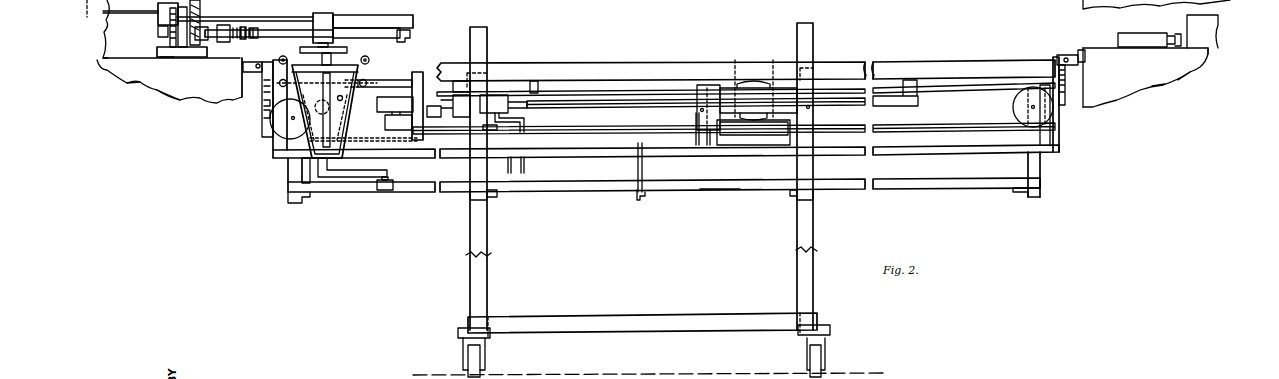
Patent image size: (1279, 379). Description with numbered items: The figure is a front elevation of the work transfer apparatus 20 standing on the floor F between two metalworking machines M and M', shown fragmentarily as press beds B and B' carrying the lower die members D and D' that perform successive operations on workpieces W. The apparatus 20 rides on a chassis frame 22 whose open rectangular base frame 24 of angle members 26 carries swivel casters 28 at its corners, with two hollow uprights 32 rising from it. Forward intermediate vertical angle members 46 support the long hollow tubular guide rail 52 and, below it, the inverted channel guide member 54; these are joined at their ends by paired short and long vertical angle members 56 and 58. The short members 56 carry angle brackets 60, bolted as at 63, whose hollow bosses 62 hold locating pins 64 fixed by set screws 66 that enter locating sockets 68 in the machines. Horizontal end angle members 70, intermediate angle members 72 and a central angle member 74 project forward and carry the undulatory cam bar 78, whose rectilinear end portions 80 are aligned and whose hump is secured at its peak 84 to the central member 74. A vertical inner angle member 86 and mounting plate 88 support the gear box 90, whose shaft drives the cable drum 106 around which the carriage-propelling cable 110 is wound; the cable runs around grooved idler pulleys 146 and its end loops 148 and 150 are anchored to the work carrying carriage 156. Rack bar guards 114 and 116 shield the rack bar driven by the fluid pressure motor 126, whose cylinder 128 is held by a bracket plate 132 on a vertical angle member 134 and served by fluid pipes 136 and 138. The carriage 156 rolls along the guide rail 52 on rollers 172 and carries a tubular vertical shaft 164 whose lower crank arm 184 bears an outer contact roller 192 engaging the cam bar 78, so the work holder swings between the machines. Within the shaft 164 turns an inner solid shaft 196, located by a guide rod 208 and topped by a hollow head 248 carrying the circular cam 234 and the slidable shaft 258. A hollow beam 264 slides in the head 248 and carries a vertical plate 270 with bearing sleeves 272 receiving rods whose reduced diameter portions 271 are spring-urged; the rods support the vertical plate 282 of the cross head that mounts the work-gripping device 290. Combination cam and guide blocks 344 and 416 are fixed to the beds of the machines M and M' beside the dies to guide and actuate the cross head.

The work transfer apparatus 20 is at (861, 53).
The chassis frame 22 is at (818, 295).
The base frame 24 is at (729, 310).
The angle members 26 is at (462, 325).
The swivel casters 28 is at (477, 354).
The hollow uprights 32 is at (472, 250).
The forward intermediate vertical angle members 46 is at (470, 167).
The hollow tubular guide rail 52 is at (613, 68).
The inverted channel guide member 54 is at (404, 153).
The short vertical angle members 56 is at (275, 146).
The long vertical angle members 58 is at (291, 177).
The angle brackets 60 is at (1070, 100).
The hollow bosses 62 is at (266, 86).
The bolts 63 is at (273, 113).
The locating pins 64 is at (257, 58).
The set screws 66 is at (1063, 55).
The locating sockets 68 is at (1102, 72).
The horizontal end angle members 70 is at (302, 203).
The intermediate horizontal angle members 72 is at (492, 196).
The central horizontal angle member 74 is at (643, 200).
The undulatory cam bar 78 is at (720, 188).
The rectilinear end portions 80 is at (411, 188).
The peak 84 is at (642, 145).
The vertical inner angle member 86 is at (698, 120).
The mounting plate 88 is at (718, 100).
The vertical gear box 90 is at (777, 80).
The cable drum 106 is at (765, 143).
The carriage-propelling cable 110 is at (968, 92).
The rack bar guard 114 is at (597, 107).
The rack bar guard 116 is at (873, 106).
The horizontal reciprocatory fluid pressure motor 126 is at (397, 108).
The cylinder 128 is at (493, 104).
The bracket plate 132 is at (433, 73).
The vertical angle member 134 is at (417, 145).
The fluid service pipe 136 is at (527, 122).
The fluid service pipe 138 is at (385, 123).
The grooved idler pulleys 146 is at (273, 122).
The cable end loop 148 is at (325, 111).
The cable end loop 150 is at (344, 99).
The work carrying carriage 156 is at (308, 163).
The tubular vertical shaft 164 is at (320, 80).
The rollers 172 is at (280, 59).
The crank arm 184 is at (352, 178).
The outer contact roller 192 is at (385, 191).
The inner solid shaft 196 is at (390, 177).
The guide rod 208 is at (331, 80).
The circular cam 234 is at (346, 52).
The hollow head 248 is at (328, 17).
The longitudinally slidable shaft 258 is at (405, 40).
The hollow beam 264 is at (393, 20).
The vertical plate 270 is at (203, 19).
The reduced diameter portions 271 is at (262, 17).
The bearing sleeves 272 is at (198, 50).
The vertical plate 282 is at (163, 27).
The work-gripping device 290 is at (120, 13).
The combination cam and guide block 344 is at (167, 52).
The combination cam and guide block 416 is at (1150, 34).
The workpieces W is at (169, 51).
The lower die member D is at (107, 76).
The bed B is at (128, 101).
The metalworking machine M is at (165, 119).
The lower die member D' is at (1223, 39).
The bed B' is at (1194, 80).
The metalworking machine M' is at (1169, 104).
The floor F is at (859, 373).